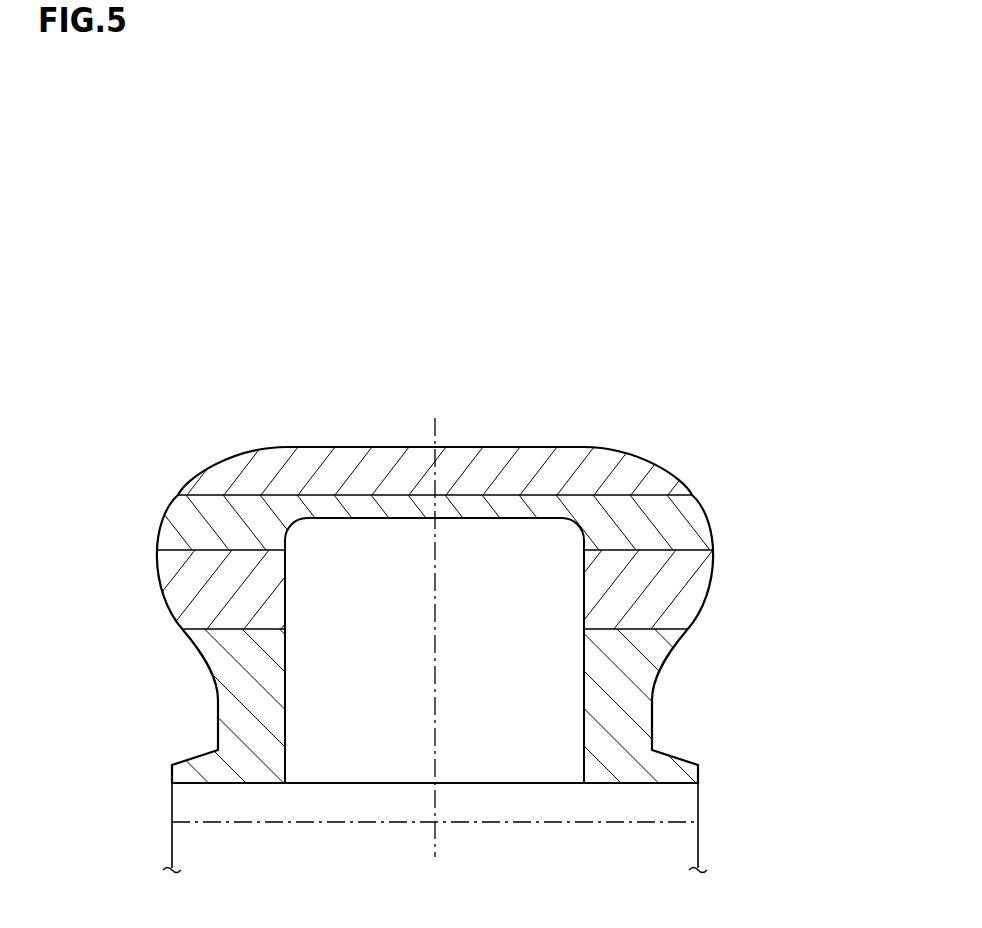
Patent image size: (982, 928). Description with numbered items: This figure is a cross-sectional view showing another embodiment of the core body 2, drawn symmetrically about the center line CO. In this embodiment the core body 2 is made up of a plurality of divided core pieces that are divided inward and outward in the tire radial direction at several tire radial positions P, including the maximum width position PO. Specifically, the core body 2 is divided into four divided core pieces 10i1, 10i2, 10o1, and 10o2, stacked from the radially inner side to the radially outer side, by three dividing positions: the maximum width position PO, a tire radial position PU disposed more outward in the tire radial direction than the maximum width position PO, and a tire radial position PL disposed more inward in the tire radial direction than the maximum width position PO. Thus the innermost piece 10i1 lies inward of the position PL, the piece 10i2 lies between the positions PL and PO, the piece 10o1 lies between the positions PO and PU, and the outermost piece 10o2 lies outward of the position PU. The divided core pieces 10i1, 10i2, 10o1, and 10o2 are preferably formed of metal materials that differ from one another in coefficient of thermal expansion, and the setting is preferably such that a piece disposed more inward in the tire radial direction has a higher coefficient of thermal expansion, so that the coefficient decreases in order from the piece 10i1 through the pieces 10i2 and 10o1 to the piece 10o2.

The core body 2 is at (247, 430).
The divided core piece 10o2 is at (238, 473).
The divided core piece 10o1 is at (200, 528).
The divided core piece 10i2 is at (193, 593).
The divided core piece 10i1 is at (248, 692).
The center axis line CO is at (435, 625).
The tire radial position P is at (702, 548).
The tire radial position PU is at (684, 444).
The maximum width position PO is at (754, 547).
The tire radial position PL is at (734, 666).